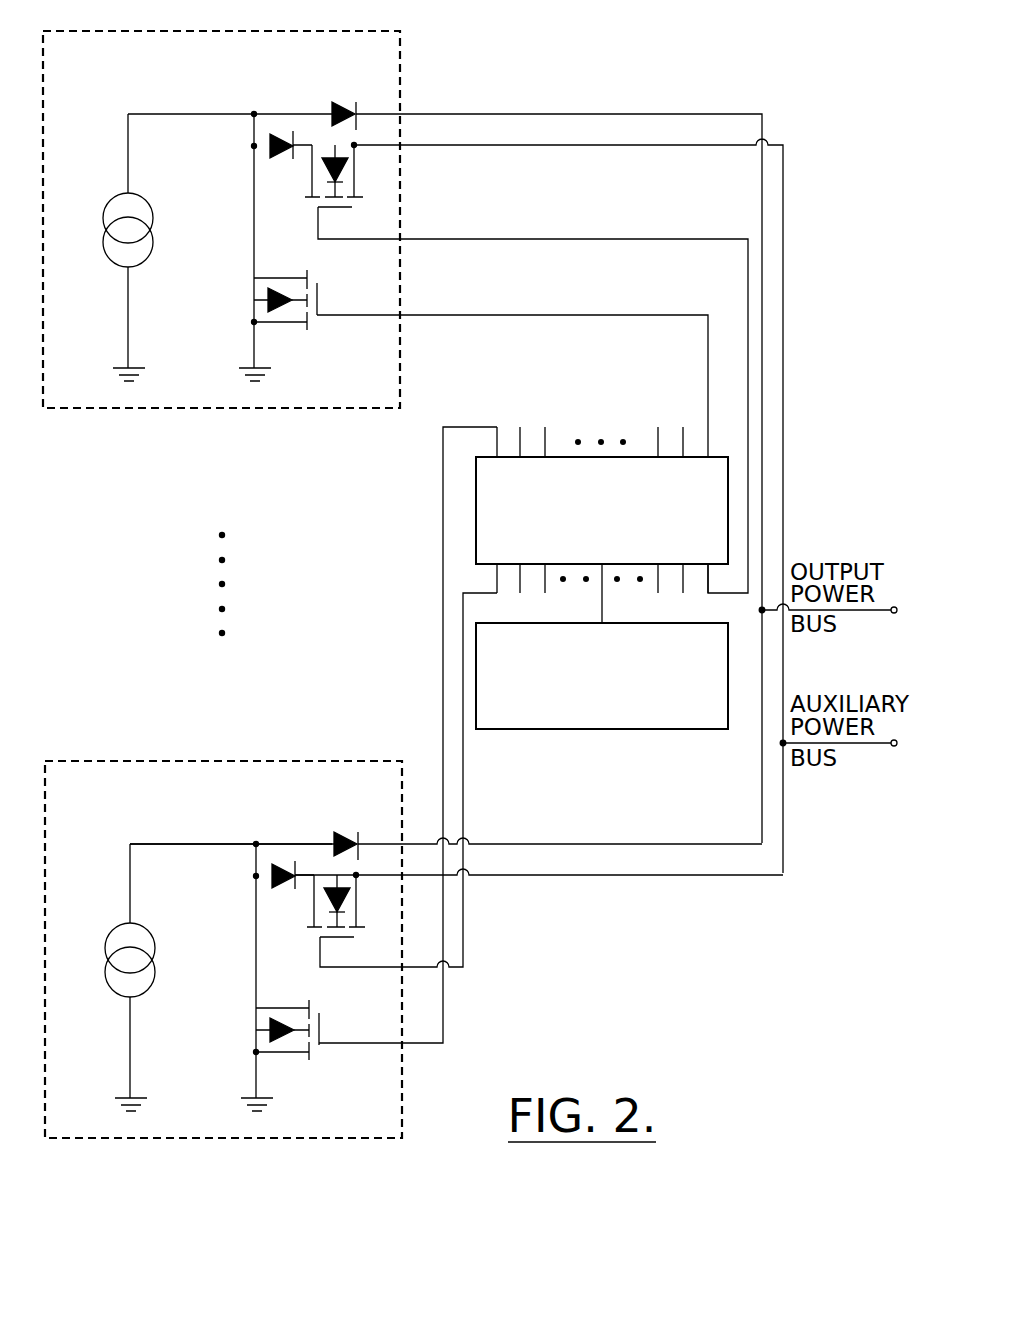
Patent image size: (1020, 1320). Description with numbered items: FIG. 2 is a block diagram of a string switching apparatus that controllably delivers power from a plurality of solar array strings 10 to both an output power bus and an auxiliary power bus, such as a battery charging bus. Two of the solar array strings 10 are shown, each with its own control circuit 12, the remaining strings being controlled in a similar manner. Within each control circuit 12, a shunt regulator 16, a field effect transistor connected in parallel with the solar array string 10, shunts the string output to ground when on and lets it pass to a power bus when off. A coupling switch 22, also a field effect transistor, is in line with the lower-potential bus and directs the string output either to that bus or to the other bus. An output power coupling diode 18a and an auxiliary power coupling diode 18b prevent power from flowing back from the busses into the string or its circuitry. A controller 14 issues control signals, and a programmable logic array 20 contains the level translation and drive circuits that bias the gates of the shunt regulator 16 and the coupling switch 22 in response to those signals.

The solar array string 10 is at (120, 252).
The control circuit 12 is at (404, 345).
The controller 14 is at (657, 730).
The shunt regulator 16 is at (289, 338).
The output power coupling diode 18a is at (345, 100).
The auxiliary power coupling diode 18b is at (283, 137).
The programmable logic array 20 is at (645, 566).
The coupling switch 22 is at (365, 183).